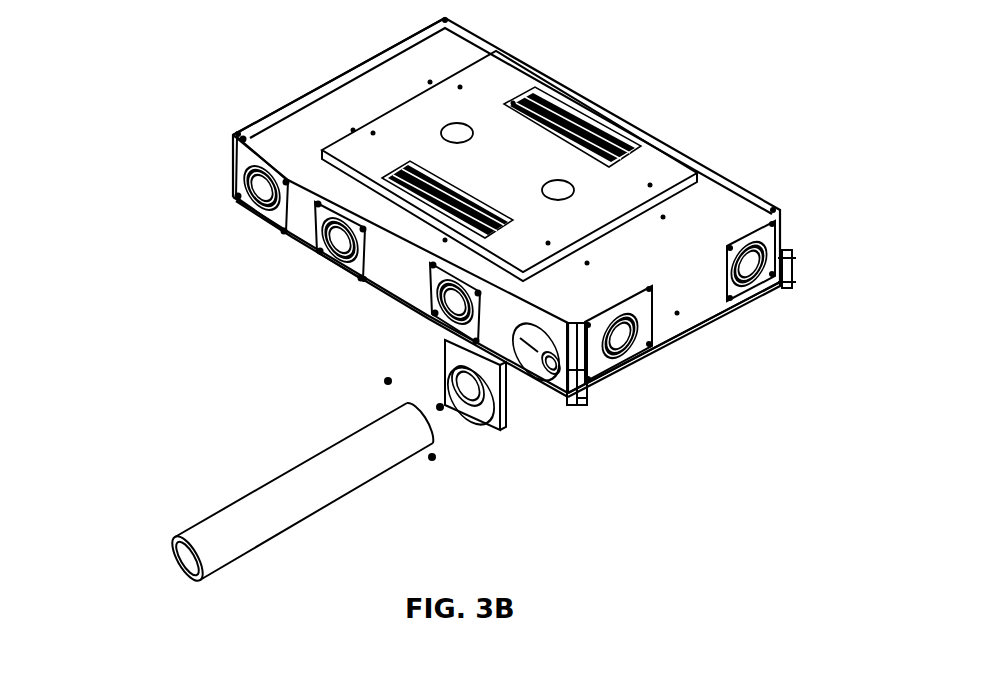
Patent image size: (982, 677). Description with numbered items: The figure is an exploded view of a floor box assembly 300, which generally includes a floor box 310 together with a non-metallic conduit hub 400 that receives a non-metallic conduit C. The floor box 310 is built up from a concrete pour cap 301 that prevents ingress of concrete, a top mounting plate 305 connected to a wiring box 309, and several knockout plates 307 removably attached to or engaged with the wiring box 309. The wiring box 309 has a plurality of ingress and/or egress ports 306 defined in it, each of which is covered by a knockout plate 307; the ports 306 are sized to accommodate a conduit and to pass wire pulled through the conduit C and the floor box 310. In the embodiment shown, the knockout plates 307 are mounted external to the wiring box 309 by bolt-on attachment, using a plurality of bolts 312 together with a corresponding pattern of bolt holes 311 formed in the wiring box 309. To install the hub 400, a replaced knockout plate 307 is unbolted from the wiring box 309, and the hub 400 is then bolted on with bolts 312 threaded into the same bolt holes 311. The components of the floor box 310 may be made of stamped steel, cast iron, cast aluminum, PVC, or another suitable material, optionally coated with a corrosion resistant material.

The floor box assembly 300 is at (183, 104).
The concrete pour cap 301 is at (343, 150).
The top mounting plate 305 is at (722, 197).
The ingress and/or egress ports 306 is at (535, 376).
The knockout plates 307 is at (330, 268).
The wiring box 309 is at (678, 342).
The floor box 310 is at (790, 335).
The bolt holes 311 is at (556, 388).
The bolts 312 is at (366, 279).
The non-metallic conduit hub 400 is at (447, 367).
The non-metallic conduit C is at (249, 488).